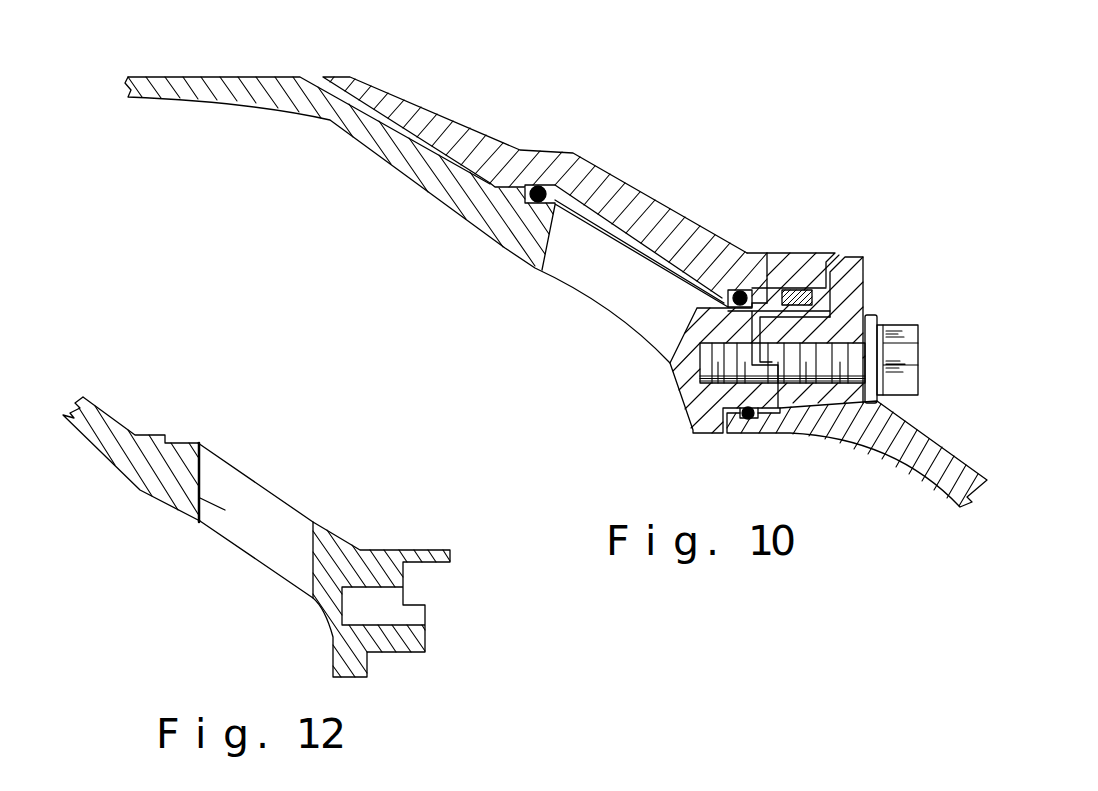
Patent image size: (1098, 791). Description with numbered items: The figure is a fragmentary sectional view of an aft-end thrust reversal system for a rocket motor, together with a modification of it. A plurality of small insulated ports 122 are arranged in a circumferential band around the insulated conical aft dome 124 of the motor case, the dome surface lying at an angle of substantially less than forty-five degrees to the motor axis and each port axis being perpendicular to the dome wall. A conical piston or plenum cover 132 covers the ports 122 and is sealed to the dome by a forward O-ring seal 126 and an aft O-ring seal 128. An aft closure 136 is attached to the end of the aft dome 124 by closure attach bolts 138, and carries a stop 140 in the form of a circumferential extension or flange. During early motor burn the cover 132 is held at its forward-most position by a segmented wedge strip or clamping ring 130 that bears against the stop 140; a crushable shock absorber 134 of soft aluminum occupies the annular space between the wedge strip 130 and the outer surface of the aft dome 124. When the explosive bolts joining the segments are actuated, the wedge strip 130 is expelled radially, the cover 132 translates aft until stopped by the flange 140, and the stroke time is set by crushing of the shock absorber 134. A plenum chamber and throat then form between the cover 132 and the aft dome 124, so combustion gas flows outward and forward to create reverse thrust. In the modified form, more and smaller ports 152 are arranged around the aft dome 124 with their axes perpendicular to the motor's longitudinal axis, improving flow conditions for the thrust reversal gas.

In FIG. 10, the insulated ports 122 is at (533, 258).
In FIG. 10, the insulated conical aft dome 124 is at (360, 128).
In FIG. 12, the insulated conical aft dome 124 is at (173, 465).
In FIG. 10, the forward O-ring seal 126 is at (540, 185).
In FIG. 10, the aft O-ring seal 128 is at (740, 290).
In FIG. 10, the wedge strip or clamping ring 130 is at (817, 263).
In FIG. 10, the conical piston or plenum cover 132 is at (594, 182).
In FIG. 10, the crushable shock absorber 134 is at (817, 295).
In FIG. 10, the aft closure 136 is at (877, 442).
In FIG. 10, the closure attach bolts 138 is at (920, 362).
In FIG. 10, the stop or circumferential flange 140 is at (855, 278).
In FIG. 12, the ports 152 is at (225, 510).